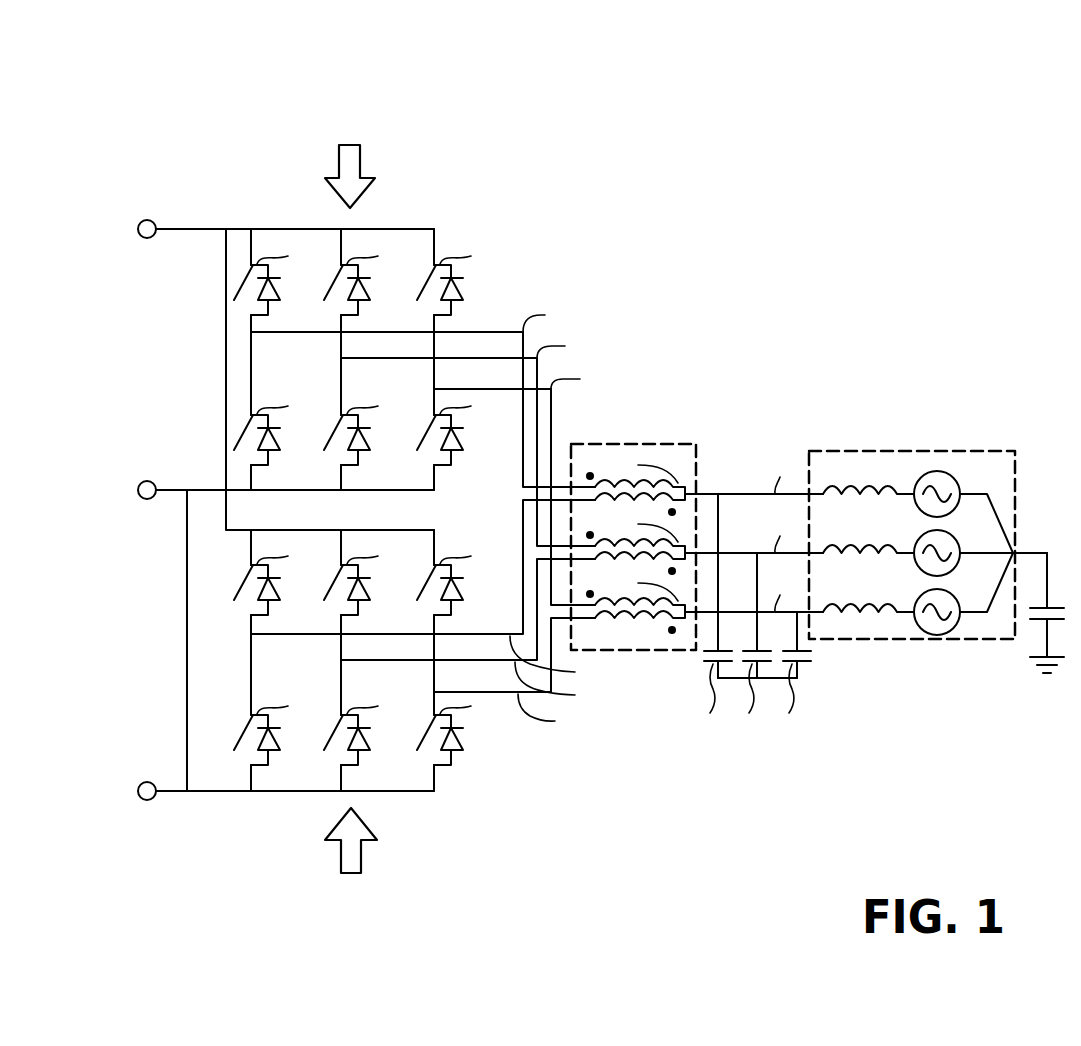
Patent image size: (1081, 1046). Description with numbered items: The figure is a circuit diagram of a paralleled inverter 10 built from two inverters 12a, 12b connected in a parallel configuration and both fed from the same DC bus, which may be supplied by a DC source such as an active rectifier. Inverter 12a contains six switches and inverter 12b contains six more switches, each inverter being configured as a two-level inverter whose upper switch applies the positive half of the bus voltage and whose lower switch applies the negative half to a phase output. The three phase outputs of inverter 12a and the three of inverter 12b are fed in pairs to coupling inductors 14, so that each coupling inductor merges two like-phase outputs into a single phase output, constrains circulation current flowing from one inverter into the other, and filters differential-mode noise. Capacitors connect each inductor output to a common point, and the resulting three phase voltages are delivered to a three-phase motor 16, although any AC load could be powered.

The paralleled inverter 10 is at (620, 225).
The inverter 12a is at (492, 310).
The inverter 12b is at (510, 754).
The coupling inductors 14 is at (683, 430).
The three-phase motor 16 is at (1014, 438).